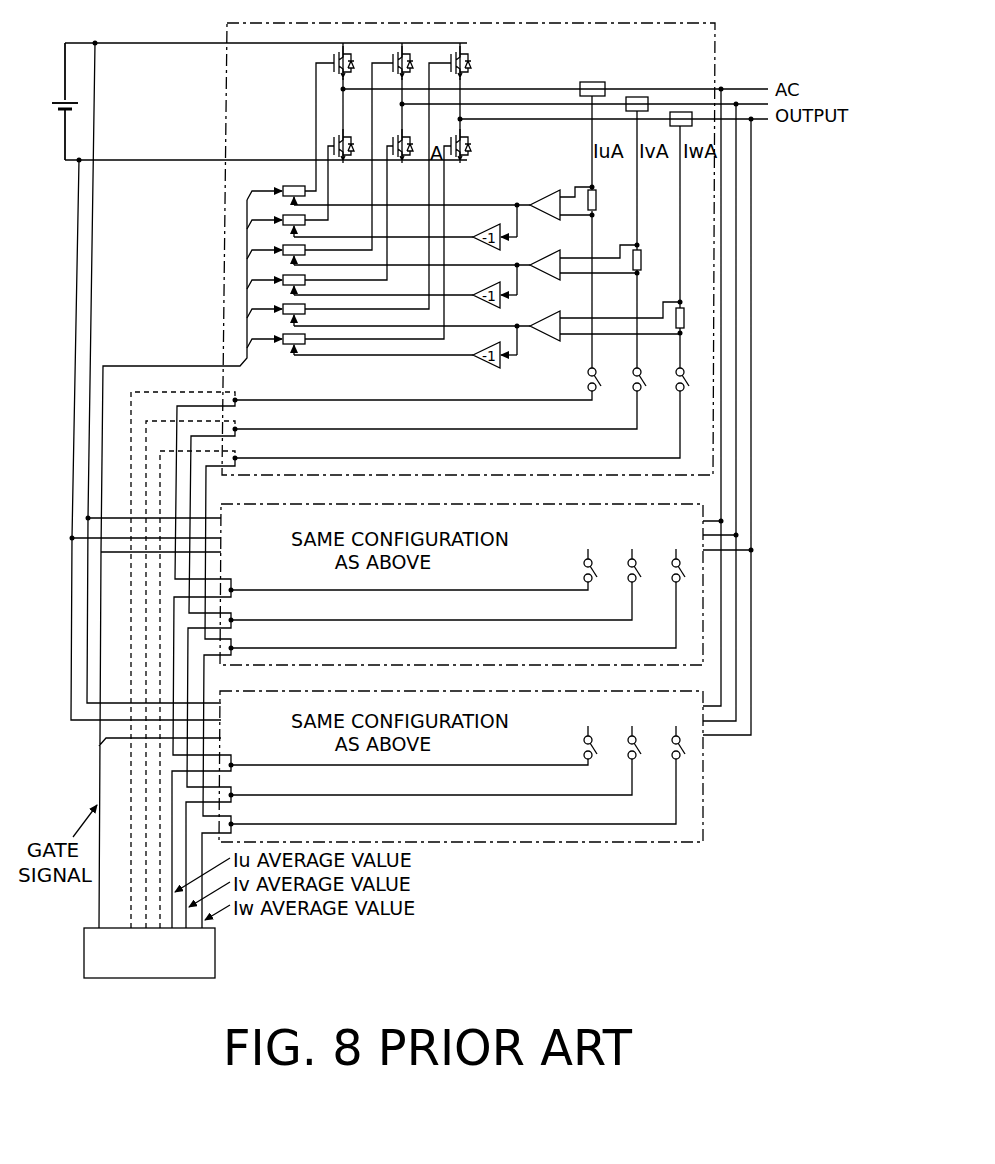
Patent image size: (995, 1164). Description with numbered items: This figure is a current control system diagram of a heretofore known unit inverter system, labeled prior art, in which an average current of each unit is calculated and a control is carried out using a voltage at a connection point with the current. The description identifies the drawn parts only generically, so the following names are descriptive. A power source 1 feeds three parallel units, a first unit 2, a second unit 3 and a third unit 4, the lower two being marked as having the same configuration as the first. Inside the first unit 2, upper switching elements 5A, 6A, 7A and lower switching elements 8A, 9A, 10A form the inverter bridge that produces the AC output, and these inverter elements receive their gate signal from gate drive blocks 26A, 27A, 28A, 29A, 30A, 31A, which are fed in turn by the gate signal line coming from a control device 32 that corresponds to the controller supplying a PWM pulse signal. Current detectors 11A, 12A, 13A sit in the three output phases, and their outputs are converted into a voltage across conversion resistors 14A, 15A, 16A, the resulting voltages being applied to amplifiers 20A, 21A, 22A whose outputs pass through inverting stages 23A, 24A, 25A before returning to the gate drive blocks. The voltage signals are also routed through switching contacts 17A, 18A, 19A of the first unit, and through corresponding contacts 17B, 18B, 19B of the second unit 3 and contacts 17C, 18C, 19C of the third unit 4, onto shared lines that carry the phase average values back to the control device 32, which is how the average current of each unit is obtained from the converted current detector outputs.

The DC power source 1 is at (63, 100).
The first inverter unit 2 is at (250, 22).
The second inverter unit 3 is at (265, 504).
The third inverter unit 4 is at (265, 691).
The upper arm switching element (U phase) 5A is at (336, 52).
The upper arm switching element (V phase) 6A is at (395, 52).
The upper arm switching element (W phase) 7A is at (453, 52).
The lower arm switching element (U phase) 8A is at (335, 141).
The lower arm switching element (V phase) 9A is at (394, 141).
The lower arm switching element (W phase) 10A is at (449, 141).
The current detector (U phase) 11A is at (598, 82).
The current detector (V phase) 12A is at (645, 97).
The current detector (W phase) 13A is at (684, 112).
The resistor 14A is at (611, 197).
The resistor 15A is at (656, 255).
The resistor 16A is at (698, 313).
The switch 17A is at (574, 375).
The switch 18A is at (621, 368).
The switch 19A is at (664, 368).
The amplifier 20A is at (545, 197).
The amplifier 21A is at (550, 254).
The amplifier 22A is at (548, 316).
The inverting amplifier 23A is at (473, 229).
The inverting amplifier 24A is at (473, 289).
The inverting amplifier 25A is at (473, 349).
The gate drive circuit 26A is at (278, 180).
The gate drive circuit 27A is at (278, 209).
The gate drive circuit 28A is at (278, 240).
The gate drive circuit 29A is at (278, 270).
The gate drive circuit 30A is at (278, 299).
The gate drive circuit 31A is at (278, 329).
The switch 17B is at (567, 565).
The switch 18B is at (616, 561).
The switch 19B is at (661, 561).
The switch 17C is at (568, 743).
The switch 18C is at (616, 738).
The switch 19C is at (661, 738).
The control device 32 is at (215, 960).